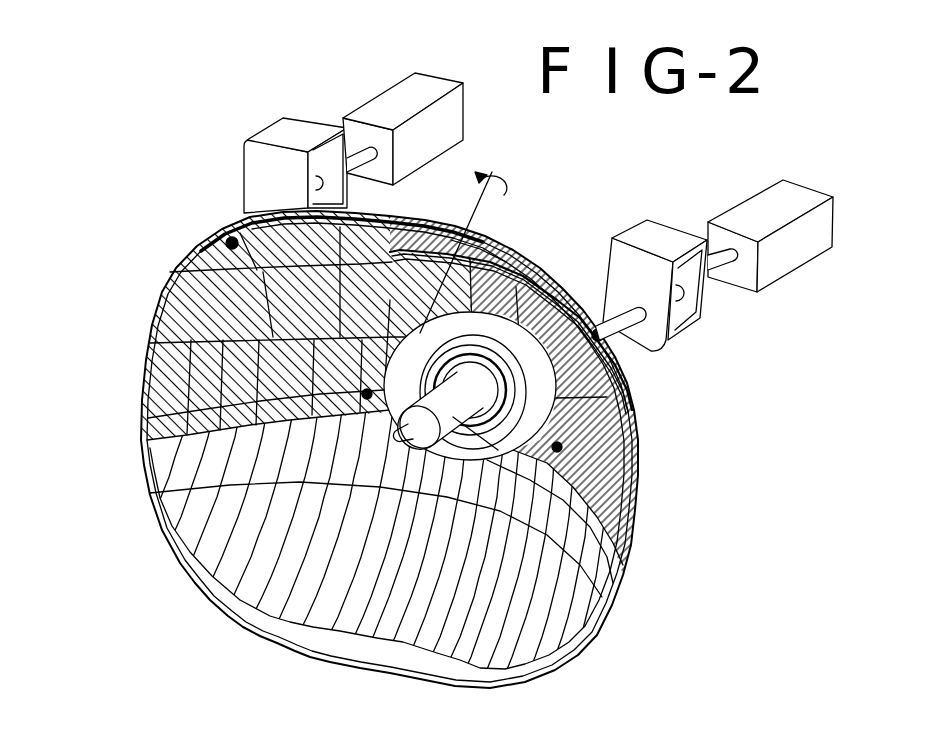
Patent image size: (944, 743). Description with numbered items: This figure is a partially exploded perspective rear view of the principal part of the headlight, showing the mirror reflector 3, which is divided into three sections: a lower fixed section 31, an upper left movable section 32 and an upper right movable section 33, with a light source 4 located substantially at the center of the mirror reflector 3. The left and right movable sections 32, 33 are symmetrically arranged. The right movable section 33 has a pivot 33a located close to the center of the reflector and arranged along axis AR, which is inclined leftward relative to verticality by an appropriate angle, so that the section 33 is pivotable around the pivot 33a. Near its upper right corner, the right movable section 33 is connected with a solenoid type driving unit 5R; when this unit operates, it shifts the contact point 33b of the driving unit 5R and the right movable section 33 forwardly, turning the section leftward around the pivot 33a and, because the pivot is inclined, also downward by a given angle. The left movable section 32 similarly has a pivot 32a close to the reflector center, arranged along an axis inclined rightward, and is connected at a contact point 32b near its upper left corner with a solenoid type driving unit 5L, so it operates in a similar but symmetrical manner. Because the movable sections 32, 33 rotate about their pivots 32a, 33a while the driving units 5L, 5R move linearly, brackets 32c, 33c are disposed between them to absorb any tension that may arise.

The mirror reflector 3 is at (379, 437).
The light source 4 is at (623, 572).
The solenoid type driving unit 5R is at (392, 98).
The solenoid type driving unit 5L is at (760, 197).
The lower fixed section 31 is at (547, 608).
The upper left movable section 32 is at (607, 397).
The pivot 32a is at (603, 483).
The contact point 32b is at (596, 328).
The bracket 32c is at (692, 307).
The upper right movable section 33 is at (190, 297).
The pivot 33a is at (146, 410).
The contact point 33b is at (200, 243).
The bracket 33c is at (277, 138).
The axis AR is at (470, 215).